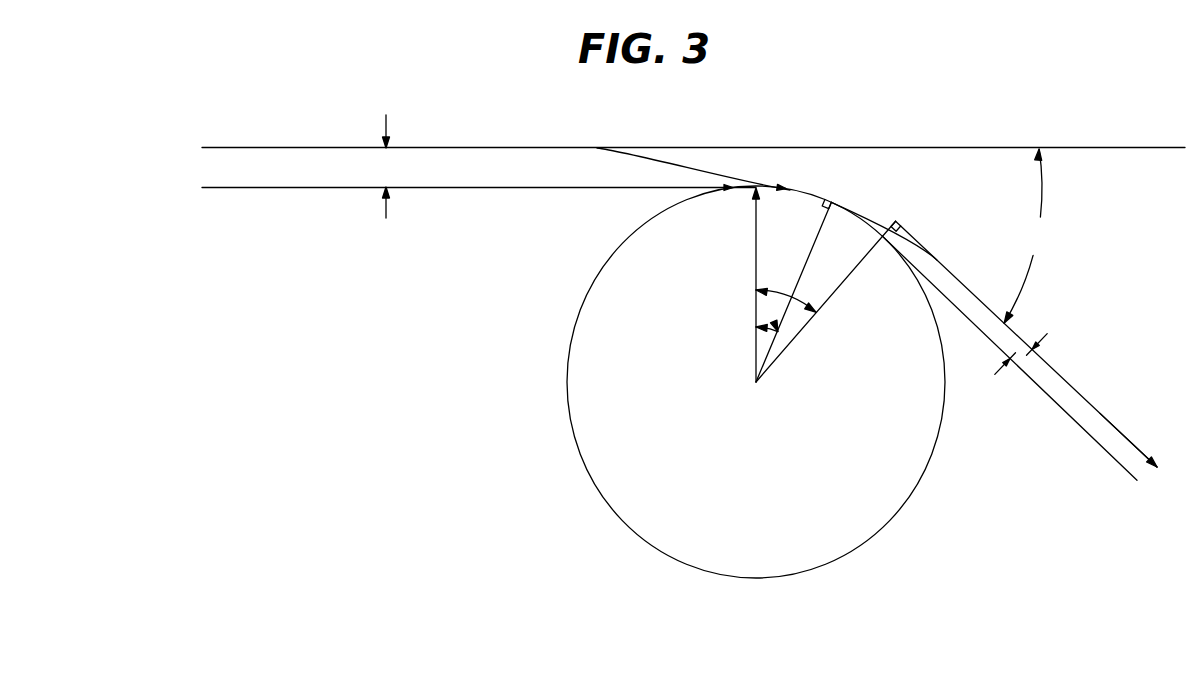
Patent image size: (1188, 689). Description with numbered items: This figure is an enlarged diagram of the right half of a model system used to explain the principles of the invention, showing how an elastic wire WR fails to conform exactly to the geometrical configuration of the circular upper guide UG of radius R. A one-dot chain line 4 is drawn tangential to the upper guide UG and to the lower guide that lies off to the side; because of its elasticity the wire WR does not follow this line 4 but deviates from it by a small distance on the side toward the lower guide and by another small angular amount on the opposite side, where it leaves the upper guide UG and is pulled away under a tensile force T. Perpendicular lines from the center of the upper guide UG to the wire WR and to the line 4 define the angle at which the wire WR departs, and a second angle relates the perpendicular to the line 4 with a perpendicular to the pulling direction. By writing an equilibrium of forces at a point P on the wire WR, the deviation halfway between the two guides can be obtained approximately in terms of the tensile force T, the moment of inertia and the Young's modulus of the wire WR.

The tangential line 4 is at (263, 188).
The upper guide UG is at (837, 553).
The radius R is at (756, 258).
The point P is at (832, 201).
The wire WR is at (1093, 408).
The tensile force T is at (1136, 451).